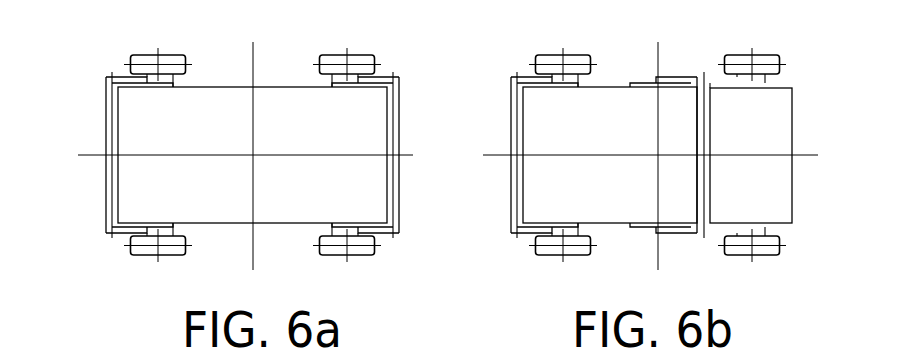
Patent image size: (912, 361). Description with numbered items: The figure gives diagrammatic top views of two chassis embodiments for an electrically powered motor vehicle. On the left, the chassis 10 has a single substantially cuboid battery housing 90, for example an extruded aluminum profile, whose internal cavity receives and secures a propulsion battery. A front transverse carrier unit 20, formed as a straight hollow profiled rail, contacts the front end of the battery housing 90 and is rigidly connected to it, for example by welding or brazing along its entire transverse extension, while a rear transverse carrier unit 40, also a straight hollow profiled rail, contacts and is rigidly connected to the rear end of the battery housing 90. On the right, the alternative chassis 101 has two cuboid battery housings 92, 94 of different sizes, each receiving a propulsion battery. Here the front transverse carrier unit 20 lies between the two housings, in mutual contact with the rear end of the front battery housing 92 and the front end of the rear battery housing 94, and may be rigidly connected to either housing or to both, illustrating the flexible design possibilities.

In FIG. 6a, the chassis 10 is at (239, 139).
In FIG. 6a, the front transverse carrier unit 20 is at (395, 193).
In FIG. 6b, the front transverse carrier unit 20 is at (705, 170).
In FIG. 6a, the rear transverse carrier unit 40 is at (110, 163).
In FIG. 6a, the battery housing 90 is at (205, 108).
In FIG. 6b, the front battery housing 92 is at (770, 128).
In FIG. 6b, the rear battery housing 94 is at (607, 110).
In FIG. 6b, the chassis 101 is at (644, 135).